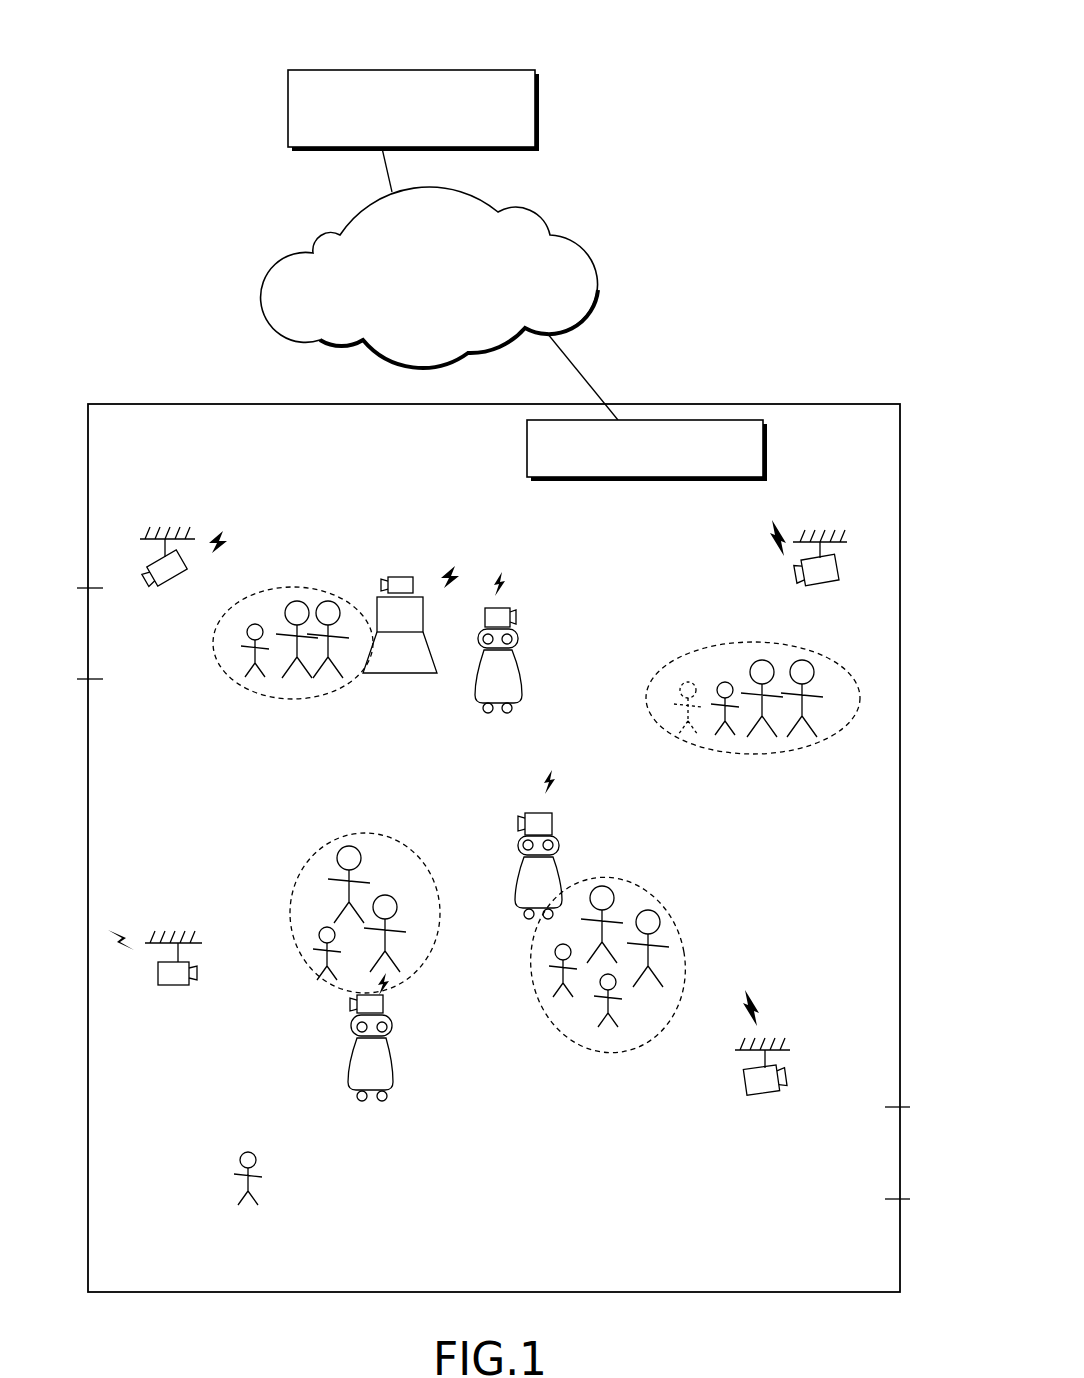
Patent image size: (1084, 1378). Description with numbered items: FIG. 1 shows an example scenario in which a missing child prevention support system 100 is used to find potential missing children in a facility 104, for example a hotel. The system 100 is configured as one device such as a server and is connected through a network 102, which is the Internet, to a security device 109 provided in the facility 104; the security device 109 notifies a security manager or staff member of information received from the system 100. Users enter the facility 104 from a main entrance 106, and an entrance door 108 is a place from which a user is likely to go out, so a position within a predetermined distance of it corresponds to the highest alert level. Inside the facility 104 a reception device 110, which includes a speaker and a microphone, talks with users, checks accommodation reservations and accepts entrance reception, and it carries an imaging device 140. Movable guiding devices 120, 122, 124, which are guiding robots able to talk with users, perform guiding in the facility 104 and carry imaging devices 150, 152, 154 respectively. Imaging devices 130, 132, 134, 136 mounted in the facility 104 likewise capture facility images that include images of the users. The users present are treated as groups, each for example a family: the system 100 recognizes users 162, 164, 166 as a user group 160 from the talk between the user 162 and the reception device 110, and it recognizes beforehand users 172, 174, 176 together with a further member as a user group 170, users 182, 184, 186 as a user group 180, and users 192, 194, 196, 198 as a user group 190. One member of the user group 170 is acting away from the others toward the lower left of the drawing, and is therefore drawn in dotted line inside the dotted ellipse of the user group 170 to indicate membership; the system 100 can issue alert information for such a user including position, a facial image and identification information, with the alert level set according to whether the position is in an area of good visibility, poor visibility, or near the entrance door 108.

The missing child prevention support system 100 is at (313, 70).
The network 102 is at (579, 266).
The facility 104 is at (152, 405).
The main entrance 106 is at (88, 612).
The entrance door 108 is at (900, 1132).
The security device 109 is at (638, 478).
The reception device 110 is at (420, 603).
The guiding device 120 is at (526, 635).
The guiding device 122 is at (403, 1048).
The guiding device 124 is at (518, 843).
The imaging device 130 is at (168, 582).
The imaging device 132 is at (820, 580).
The imaging device 134 is at (757, 1085).
The imaging device 136 is at (172, 980).
The imaging device 140 is at (400, 585).
The imaging device 150 is at (503, 616).
The imaging device 152 is at (383, 1003).
The imaging device 154 is at (530, 815).
The user group 160 is at (283, 642).
The user 162 is at (330, 601).
The user 164 is at (297, 608).
The user 166 is at (252, 624).
The user group 170 is at (753, 705).
The user 172 is at (802, 660).
The user 174 is at (762, 660).
The user 176 is at (722, 682).
The user group 180 is at (336, 901).
The user 182 is at (350, 848).
The user 184 is at (386, 898).
The user 186 is at (322, 934).
The user group 190 is at (597, 956).
The user 192 is at (648, 910).
The user 194 is at (602, 886).
The user 196 is at (558, 950).
The user 198 is at (616, 986).